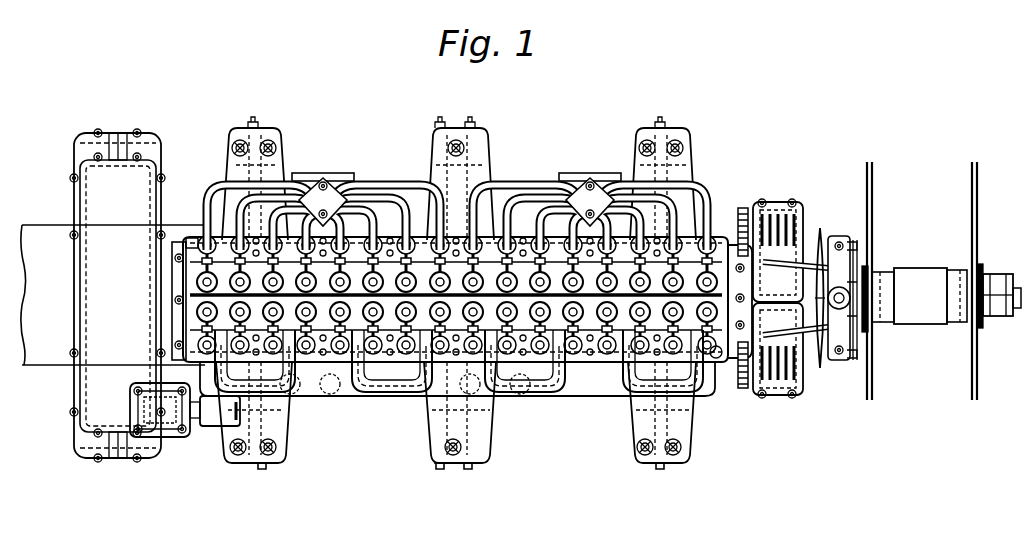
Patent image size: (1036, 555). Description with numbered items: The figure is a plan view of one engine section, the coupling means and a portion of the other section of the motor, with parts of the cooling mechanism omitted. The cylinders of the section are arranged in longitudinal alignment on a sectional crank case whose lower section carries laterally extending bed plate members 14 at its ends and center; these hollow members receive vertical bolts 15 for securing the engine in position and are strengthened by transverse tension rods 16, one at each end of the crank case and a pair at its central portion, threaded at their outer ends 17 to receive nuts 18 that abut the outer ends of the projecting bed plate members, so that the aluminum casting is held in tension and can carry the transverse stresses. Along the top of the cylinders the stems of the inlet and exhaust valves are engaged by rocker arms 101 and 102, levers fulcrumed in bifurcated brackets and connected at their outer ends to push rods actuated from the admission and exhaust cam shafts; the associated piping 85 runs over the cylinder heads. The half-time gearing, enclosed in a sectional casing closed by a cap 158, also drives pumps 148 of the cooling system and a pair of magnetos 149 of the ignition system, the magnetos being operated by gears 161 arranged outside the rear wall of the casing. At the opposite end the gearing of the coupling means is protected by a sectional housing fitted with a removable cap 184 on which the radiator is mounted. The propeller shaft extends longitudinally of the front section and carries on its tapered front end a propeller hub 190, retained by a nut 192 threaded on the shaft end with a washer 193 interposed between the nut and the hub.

The bed plate members 14 is at (236, 432).
The vertical bolts 15 is at (262, 463).
The transverse tension rods 16 is at (274, 432).
The threaded outer ends 17 is at (440, 464).
The nuts 18 is at (470, 464).
The intake manifold pipes 85 is at (528, 195).
The rocker arms 101 is at (719, 358).
The rocker arms 102 is at (192, 240).
The pumps 148 is at (826, 356).
The magnetos 149 is at (780, 372).
The cap 158 is at (786, 212).
The gears 161 is at (742, 214).
The removable cap 184 is at (98, 210).
The propeller hub 190 is at (910, 290).
The nut 192 is at (998, 282).
The washer 193 is at (980, 325).